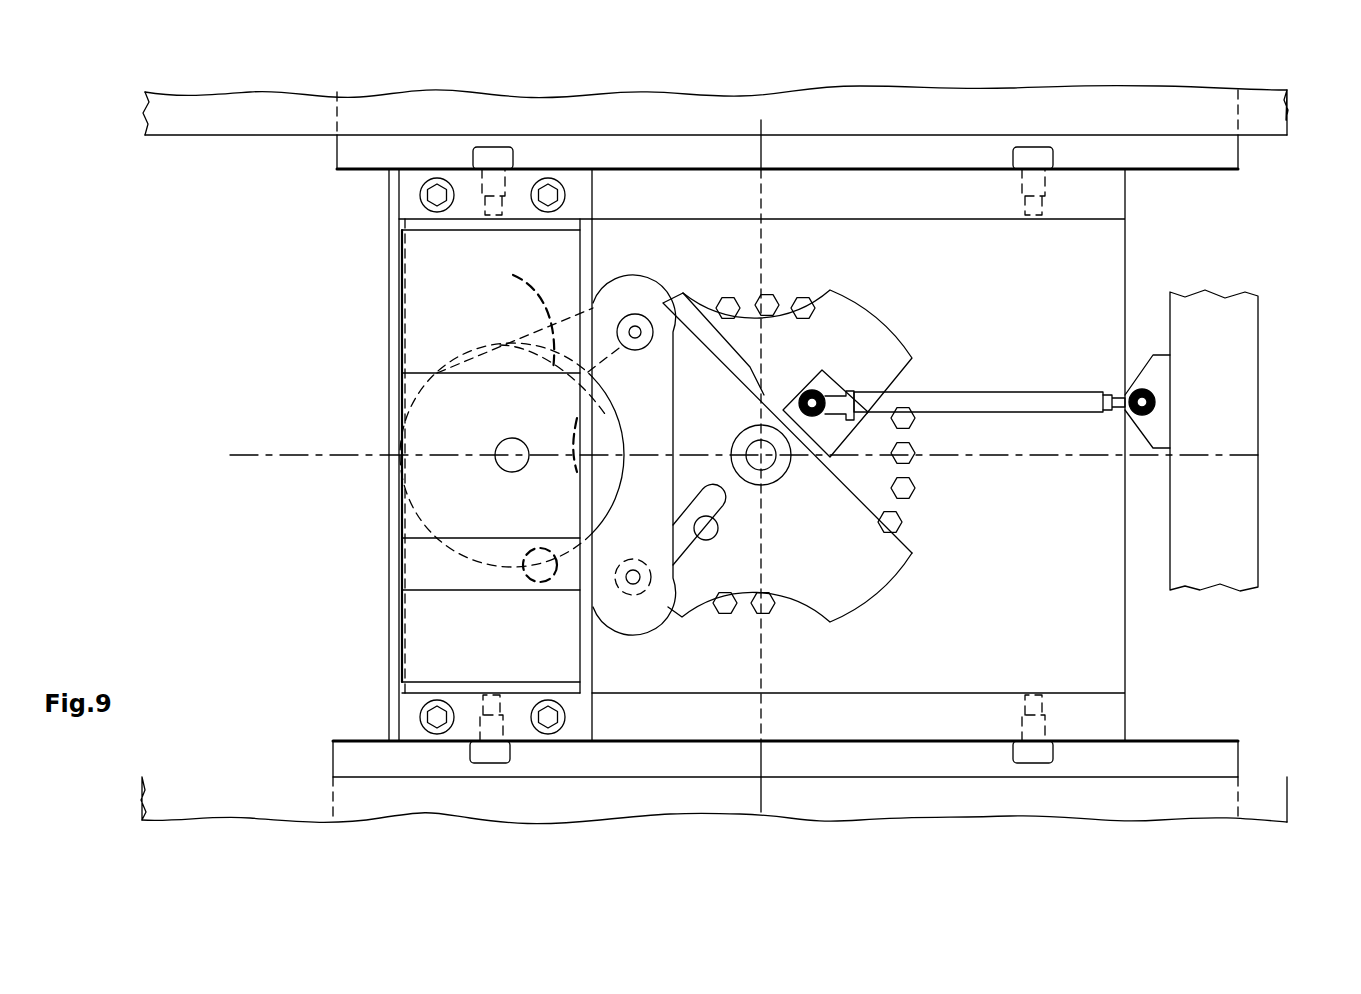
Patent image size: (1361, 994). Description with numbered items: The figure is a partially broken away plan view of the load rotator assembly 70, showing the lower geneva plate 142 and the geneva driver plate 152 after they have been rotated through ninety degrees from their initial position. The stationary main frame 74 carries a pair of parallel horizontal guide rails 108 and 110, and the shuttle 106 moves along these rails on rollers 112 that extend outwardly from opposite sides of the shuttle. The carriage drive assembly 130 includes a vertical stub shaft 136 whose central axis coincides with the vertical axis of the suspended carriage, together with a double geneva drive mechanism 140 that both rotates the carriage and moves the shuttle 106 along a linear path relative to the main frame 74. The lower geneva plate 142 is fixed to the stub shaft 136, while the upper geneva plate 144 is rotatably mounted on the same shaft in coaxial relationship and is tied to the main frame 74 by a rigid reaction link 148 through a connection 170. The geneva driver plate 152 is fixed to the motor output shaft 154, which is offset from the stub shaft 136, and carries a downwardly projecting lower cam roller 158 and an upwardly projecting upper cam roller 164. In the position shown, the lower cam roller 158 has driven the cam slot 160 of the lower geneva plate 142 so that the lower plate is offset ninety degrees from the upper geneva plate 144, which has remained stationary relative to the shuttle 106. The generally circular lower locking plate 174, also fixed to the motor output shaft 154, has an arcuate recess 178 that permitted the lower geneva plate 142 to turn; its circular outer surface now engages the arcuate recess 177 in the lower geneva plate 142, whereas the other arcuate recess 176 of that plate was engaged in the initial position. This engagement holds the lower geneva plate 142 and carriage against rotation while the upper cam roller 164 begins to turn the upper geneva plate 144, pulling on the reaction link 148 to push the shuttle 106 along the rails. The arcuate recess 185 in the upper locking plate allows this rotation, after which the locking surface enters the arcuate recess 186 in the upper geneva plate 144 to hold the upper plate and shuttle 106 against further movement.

The load rotator assembly 70 is at (266, 98).
The main frame 74 is at (1225, 408).
The shuttle 106 is at (1085, 628).
The guide rail 108 is at (1210, 760).
The guide rail 110 is at (1197, 157).
The rollers 112 is at (488, 157).
The carriage drive assembly 130 is at (691, 675).
The stub shaft 136 is at (771, 465).
The double geneva drive mechanism 140 is at (573, 598).
The lower geneva plate 142 is at (903, 584).
The upper geneva plate 144 is at (886, 315).
The reaction link 148 is at (983, 398).
The geneva driver plate 152 is at (580, 545).
The motor output shaft 154 is at (512, 438).
The lower cam roller 158 is at (630, 598).
The cam slot 160 is at (718, 520).
The upper cam roller 164 is at (633, 330).
The connection 170 is at (806, 398).
The lower locking plate 174 is at (528, 523).
The arcuate recess 176 is at (790, 608).
The arcuate recess 177 is at (603, 412).
The arcuate recess 178 is at (535, 572).
The arcuate recess 185 is at (512, 414).
The arcuate recess 186 is at (794, 305).